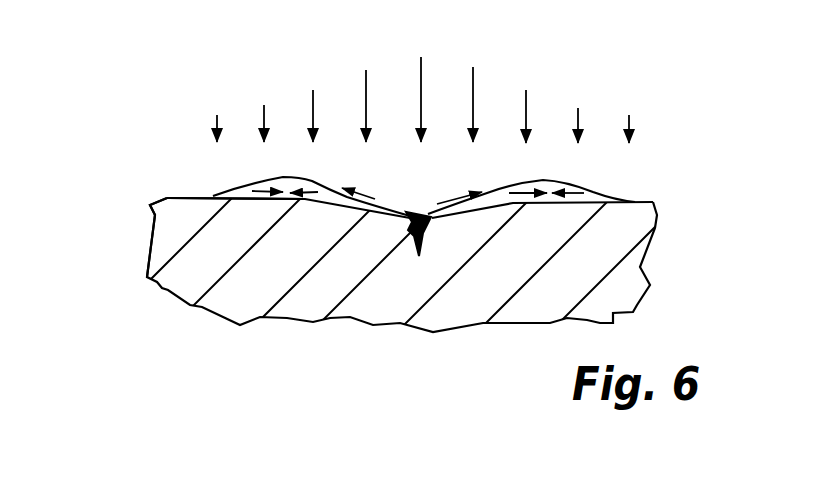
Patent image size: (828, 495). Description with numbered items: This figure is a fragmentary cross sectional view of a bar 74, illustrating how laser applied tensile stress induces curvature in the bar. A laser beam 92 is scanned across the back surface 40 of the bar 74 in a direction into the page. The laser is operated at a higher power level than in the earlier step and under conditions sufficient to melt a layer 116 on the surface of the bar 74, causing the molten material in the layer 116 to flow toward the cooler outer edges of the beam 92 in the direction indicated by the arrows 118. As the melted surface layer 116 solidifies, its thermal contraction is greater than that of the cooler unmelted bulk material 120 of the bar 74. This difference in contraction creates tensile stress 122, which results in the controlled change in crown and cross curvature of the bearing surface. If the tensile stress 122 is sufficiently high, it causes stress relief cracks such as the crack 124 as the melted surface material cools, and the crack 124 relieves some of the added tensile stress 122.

The back surface 40 is at (177, 198).
The bar 74 is at (668, 246).
The laser beam 92 is at (648, 72).
The layer 116 is at (637, 170).
The arrows 118 is at (367, 194).
The unmelted bulk material 120 is at (138, 198).
The tensile stress 122 is at (315, 183).
The stress relief crack 124 is at (441, 244).